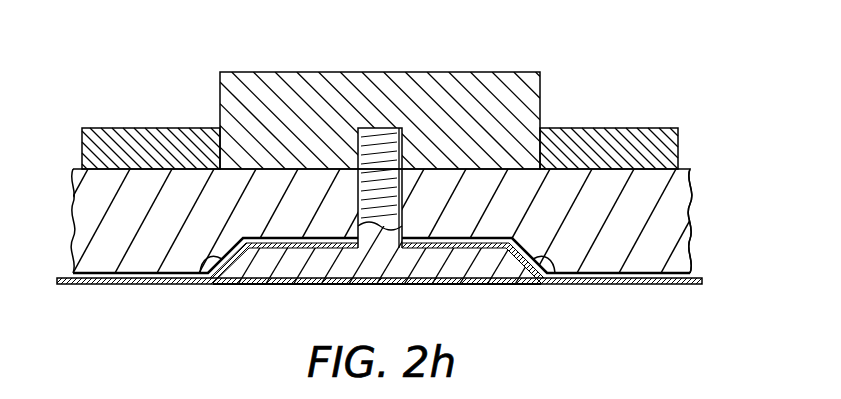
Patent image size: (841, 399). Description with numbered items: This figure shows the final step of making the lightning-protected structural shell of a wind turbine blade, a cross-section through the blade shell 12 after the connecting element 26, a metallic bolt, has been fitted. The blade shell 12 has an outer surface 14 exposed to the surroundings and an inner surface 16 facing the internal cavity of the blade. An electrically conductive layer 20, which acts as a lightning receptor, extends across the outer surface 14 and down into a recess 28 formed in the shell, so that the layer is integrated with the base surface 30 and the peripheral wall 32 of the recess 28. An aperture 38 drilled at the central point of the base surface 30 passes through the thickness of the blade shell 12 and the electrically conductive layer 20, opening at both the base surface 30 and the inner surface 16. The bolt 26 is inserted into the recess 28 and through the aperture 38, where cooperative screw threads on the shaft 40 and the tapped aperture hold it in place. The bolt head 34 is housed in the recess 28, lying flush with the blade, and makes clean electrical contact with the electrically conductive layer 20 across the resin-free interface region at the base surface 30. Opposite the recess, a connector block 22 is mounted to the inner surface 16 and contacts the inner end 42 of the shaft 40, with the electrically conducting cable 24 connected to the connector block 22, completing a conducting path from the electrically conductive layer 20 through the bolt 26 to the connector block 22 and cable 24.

The blade shell 12 is at (74, 241).
The outer surface 14 is at (689, 262).
The inner surface 16 is at (637, 168).
The electrically conductive layer 20 is at (637, 287).
The connector block 22 is at (247, 80).
The electrically conducting cable 24 is at (108, 138).
The connecting element 26 is at (447, 270).
The recess 28 is at (441, 214).
The base surface 30 is at (268, 240).
The peripheral wall 32 is at (206, 263).
The bolt head 34 is at (500, 273).
The aperture 38 is at (343, 128).
The shaft 40 is at (391, 128).
The inner end 42 is at (397, 137).